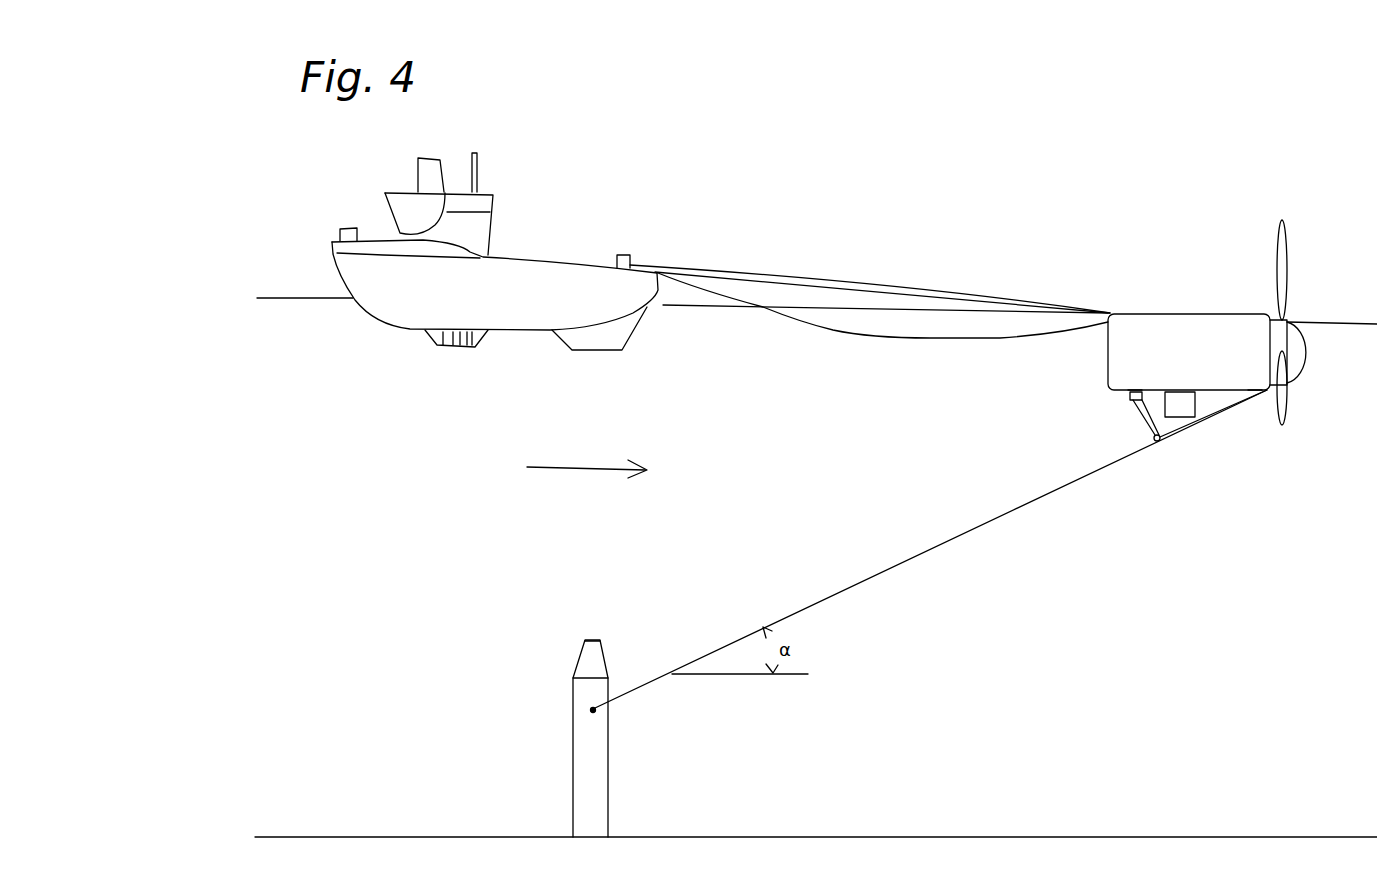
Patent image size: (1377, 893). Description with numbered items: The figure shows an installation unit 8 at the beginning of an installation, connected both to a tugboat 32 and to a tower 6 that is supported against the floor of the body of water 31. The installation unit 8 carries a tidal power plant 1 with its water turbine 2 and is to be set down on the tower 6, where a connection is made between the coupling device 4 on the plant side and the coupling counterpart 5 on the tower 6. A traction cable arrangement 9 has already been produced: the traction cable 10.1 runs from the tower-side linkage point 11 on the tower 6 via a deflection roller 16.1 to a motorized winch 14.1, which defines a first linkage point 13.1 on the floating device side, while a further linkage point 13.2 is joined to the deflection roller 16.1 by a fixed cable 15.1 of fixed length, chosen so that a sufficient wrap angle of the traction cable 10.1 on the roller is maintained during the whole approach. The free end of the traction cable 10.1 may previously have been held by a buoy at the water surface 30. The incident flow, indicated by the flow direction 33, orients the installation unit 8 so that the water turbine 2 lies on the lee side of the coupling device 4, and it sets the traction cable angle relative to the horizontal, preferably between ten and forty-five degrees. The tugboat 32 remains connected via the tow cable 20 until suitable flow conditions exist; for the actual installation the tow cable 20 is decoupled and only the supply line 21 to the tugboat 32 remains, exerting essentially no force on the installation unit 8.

The tidal power plant 1 is at (1189, 373).
The water turbine 2 is at (1287, 323).
The coupling device 4 is at (1183, 403).
The coupling counterpart 5 is at (590, 650).
The tower 6 is at (592, 762).
The installation unit 8 is at (1200, 362).
The traction cable arrangement 9 is at (1012, 668).
The traction cable 10.1 is at (952, 540).
The tower-side linkage point 11 is at (597, 708).
The first linkage point 13.1 is at (1130, 392).
The further linkage point 13.2 is at (1255, 392).
The motorized winch 14.1 is at (1130, 396).
The fixed cable 15.1 is at (1227, 408).
The deflection roller 16.1 is at (1157, 441).
The tow cable 20 is at (833, 278).
The supply line 21 is at (850, 337).
The water surface 30 is at (290, 299).
The floor of the body of water 31 is at (1193, 836).
The tugboat 32 is at (400, 313).
The flow direction 33 is at (582, 470).